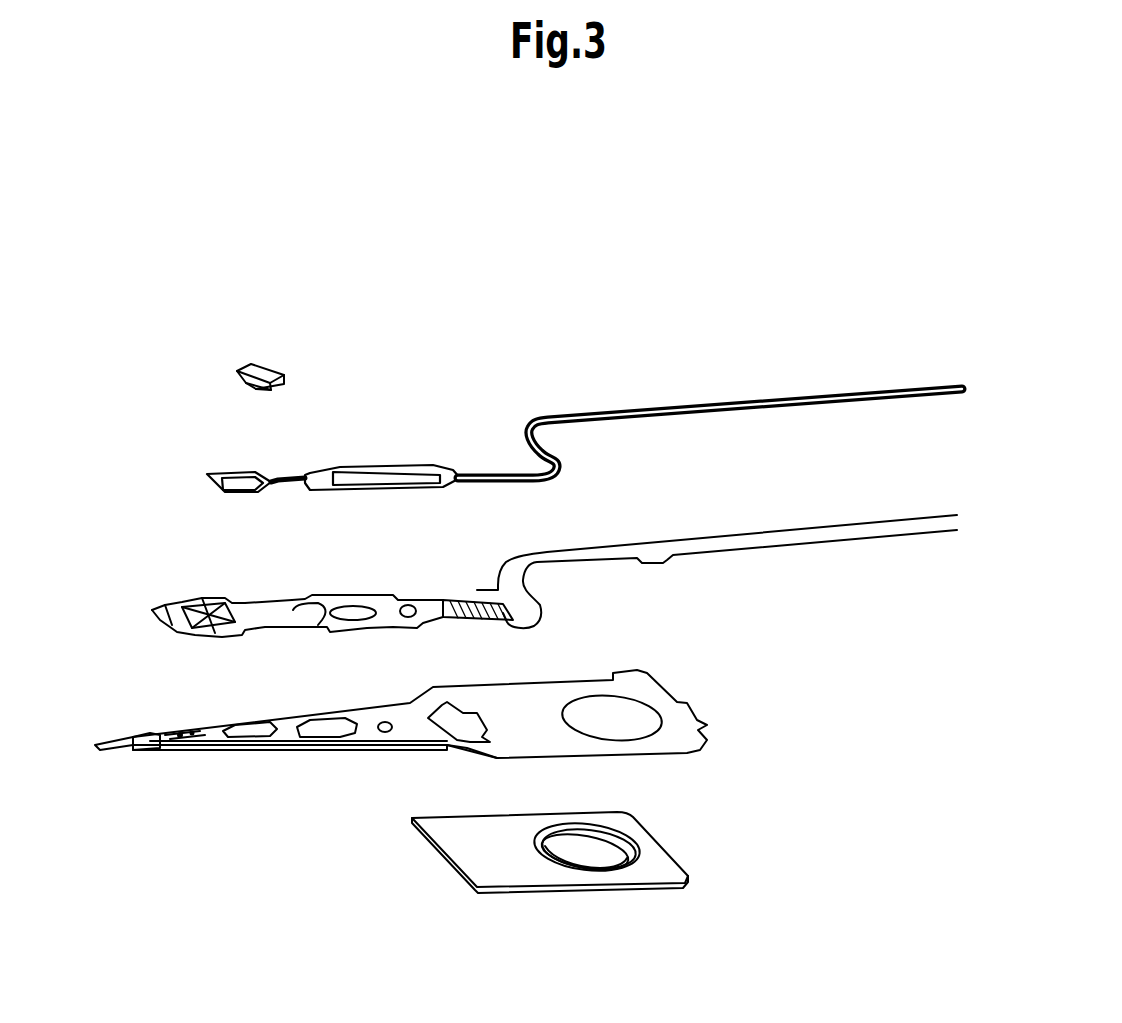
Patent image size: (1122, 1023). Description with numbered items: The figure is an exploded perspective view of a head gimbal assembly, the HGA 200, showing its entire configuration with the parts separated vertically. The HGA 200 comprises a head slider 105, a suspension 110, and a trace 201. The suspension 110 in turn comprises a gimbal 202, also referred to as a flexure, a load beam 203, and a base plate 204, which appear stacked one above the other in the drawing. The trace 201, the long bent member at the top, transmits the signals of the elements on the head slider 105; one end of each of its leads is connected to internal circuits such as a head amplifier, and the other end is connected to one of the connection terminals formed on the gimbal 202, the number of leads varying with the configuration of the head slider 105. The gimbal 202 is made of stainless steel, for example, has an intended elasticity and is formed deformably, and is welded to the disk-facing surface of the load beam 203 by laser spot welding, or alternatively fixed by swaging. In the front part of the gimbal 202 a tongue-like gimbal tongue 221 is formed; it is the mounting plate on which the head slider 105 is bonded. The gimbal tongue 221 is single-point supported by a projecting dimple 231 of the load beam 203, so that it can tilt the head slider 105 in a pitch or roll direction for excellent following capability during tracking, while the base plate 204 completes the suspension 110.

The HGA 200 is at (481, 199).
The head slider 105 is at (258, 362).
The trace 201 is at (847, 396).
The gimbal 202 is at (548, 549).
The load beam 203 is at (557, 684).
The base plate 204 is at (673, 851).
The gimbal tongue 221 is at (207, 598).
The dimple 231 is at (180, 733).
The suspension 110 is at (755, 870).